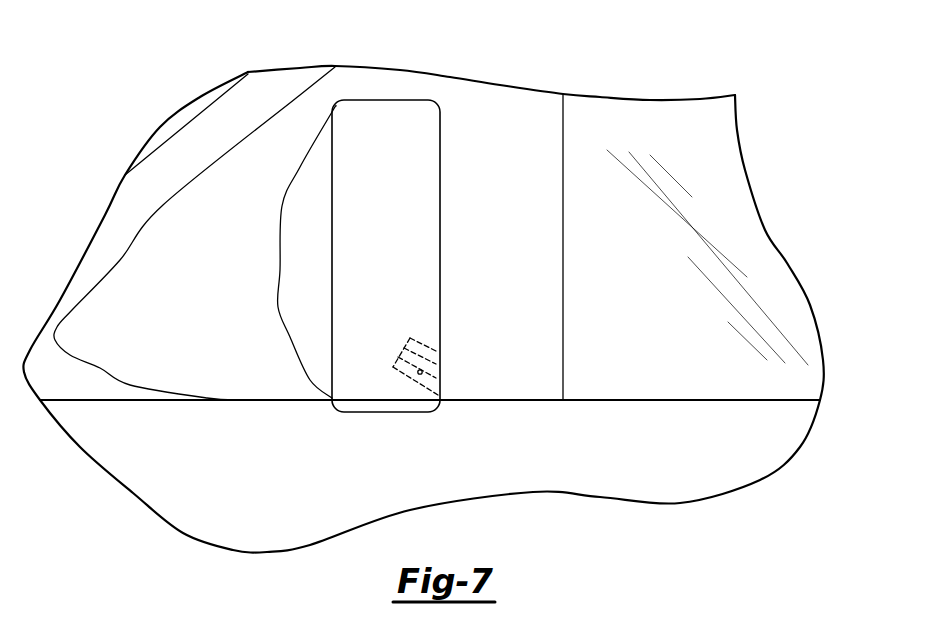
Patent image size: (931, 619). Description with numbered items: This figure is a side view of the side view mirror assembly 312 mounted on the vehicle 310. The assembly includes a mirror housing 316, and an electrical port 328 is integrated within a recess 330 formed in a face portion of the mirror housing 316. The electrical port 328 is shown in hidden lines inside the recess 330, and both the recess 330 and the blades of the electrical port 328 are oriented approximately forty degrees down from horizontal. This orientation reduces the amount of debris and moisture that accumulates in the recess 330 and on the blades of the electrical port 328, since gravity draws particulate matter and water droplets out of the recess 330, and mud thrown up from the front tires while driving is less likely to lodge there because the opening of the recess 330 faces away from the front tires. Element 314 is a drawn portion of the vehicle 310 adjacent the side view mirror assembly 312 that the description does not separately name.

The vehicle 310 is at (667, 503).
The side view mirror assembly 312 is at (522, 246).
The A-pillar 314 is at (287, 107).
The mirror housing 316 is at (295, 267).
The electrical port 328 is at (426, 378).
The recess 330 is at (412, 337).